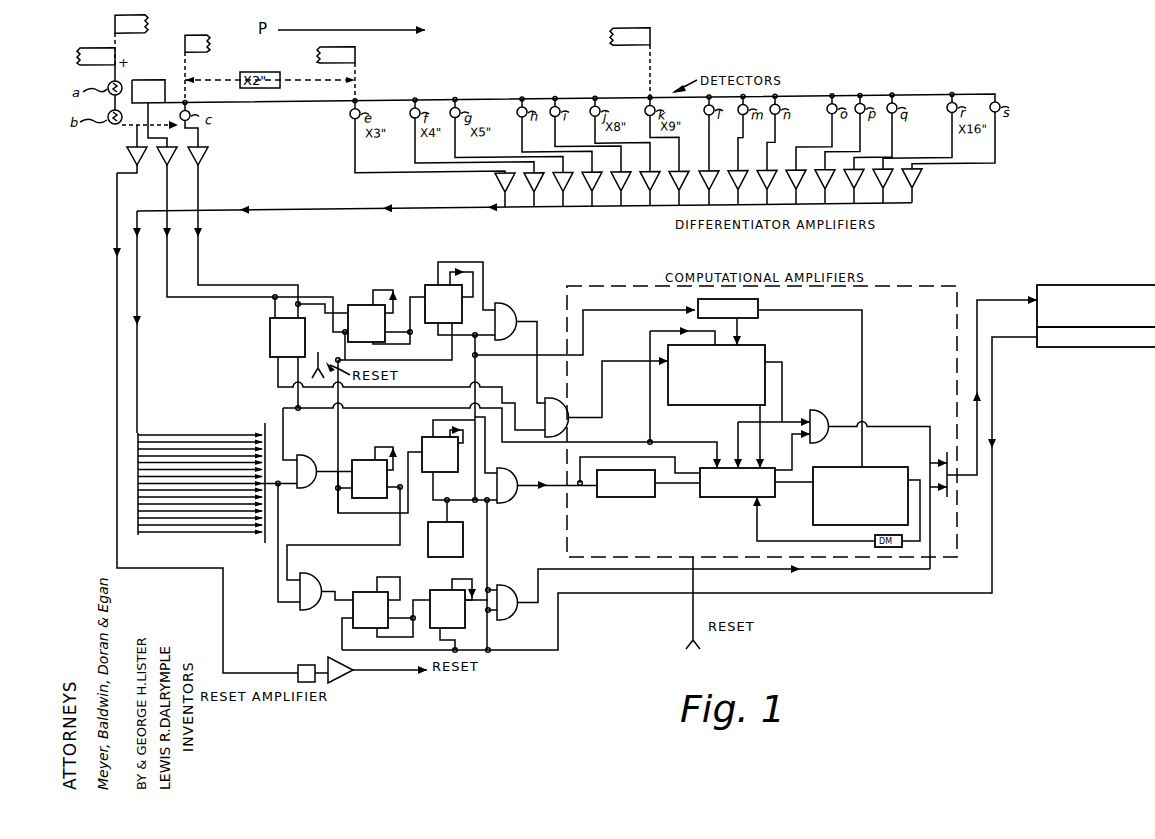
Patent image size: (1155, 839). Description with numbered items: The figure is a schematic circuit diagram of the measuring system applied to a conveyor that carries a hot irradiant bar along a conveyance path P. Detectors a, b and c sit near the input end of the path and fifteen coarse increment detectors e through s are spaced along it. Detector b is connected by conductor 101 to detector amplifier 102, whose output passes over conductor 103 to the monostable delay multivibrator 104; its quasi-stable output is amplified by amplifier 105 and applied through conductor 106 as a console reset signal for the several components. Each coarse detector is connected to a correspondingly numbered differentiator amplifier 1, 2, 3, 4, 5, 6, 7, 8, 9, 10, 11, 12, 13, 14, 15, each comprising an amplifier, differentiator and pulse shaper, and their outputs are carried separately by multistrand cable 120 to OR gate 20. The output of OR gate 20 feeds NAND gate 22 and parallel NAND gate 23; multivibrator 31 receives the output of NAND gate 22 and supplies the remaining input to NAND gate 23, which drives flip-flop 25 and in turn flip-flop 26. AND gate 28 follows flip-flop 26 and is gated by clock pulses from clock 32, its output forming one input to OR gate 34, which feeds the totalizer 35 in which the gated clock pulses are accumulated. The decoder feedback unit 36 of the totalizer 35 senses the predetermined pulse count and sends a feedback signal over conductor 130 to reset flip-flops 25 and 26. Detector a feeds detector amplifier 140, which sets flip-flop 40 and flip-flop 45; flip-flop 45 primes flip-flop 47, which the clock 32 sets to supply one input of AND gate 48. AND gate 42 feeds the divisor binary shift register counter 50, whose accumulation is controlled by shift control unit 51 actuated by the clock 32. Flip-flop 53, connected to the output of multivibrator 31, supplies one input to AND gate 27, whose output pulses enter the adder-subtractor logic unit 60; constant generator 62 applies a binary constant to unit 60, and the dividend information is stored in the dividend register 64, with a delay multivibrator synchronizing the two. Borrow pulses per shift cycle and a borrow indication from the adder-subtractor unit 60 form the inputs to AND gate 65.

The differentiator amplifier 1 is at (297, 128).
The differentiator amplifier 2 is at (431, 127).
The differentiator amplifier 3 is at (345, 110).
The differentiator amplifier 4 is at (616, 117).
The differentiator amplifier 5 is at (409, 120).
The differentiator amplifier 6 is at (651, 188).
The differentiator amplifier 7 is at (680, 188).
The differentiator amplifier 8 is at (710, 188).
The differentiator amplifier 9 is at (739, 188).
The differentiator amplifier 10 is at (771, 187).
The differentiator amplifier 11 is at (800, 187).
The differentiator amplifier 12 is at (829, 187).
The differentiator amplifier 13 is at (858, 186).
The differentiator amplifier 14 is at (887, 186).
The differentiator amplifier 15 is at (916, 186).
The OR gate 20 is at (262, 433).
The NAND gate 22 is at (308, 456).
The second NAND gate 23 is at (313, 574).
The flip-flop circuit 25 is at (365, 592).
The flip-flop circuit 26 is at (444, 590).
The AND gate 27 is at (534, 470).
The AND gate 28 is at (506, 585).
The multivibrator 31 is at (365, 460).
The clock 32 is at (428, 541).
The OR gate 34 is at (962, 494).
The totalizer 35 is at (1098, 278).
The decoder feedback unit 36 is at (1119, 347).
The flip-flop 40 is at (268, 332).
The AND gate 42 is at (556, 402).
The flip-flop circuit 45 is at (356, 302).
The flip-flop 47 is at (428, 284).
The AND gate 48 is at (527, 297).
The binary shift register counter (Divisor) 50 is at (759, 345).
The shift control unit 51 is at (760, 300).
The flip-flop 53 is at (420, 446).
The adder-subtractor logic unit 60 is at (735, 498).
The constant generator 62 is at (624, 497).
The binary shift register counter (Dividend) 64 is at (898, 467).
The AND gate 65 is at (840, 404).
The conductor 101 is at (128, 128).
The detector amplifier 102 is at (128, 155).
The conductor 103 is at (117, 208).
The delay multivibrator 104 is at (297, 665).
The amplifier 105 is at (350, 663).
The conductor 106 is at (414, 672).
The multistrand cable 120 is at (336, 210).
The conductor 130 is at (930, 593).
The detector amplifier 140 is at (162, 161).